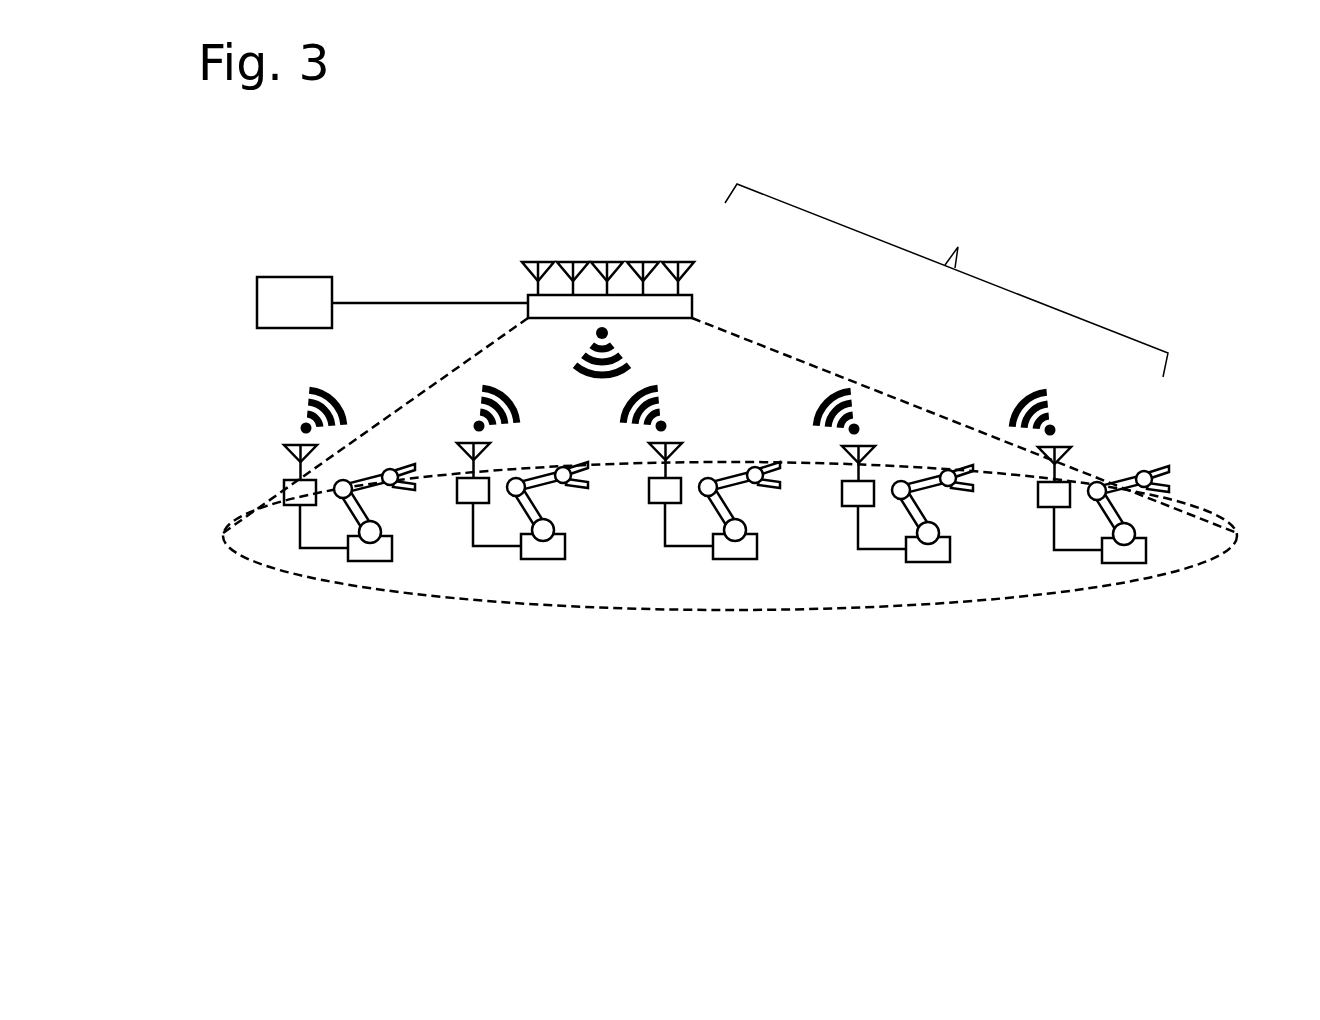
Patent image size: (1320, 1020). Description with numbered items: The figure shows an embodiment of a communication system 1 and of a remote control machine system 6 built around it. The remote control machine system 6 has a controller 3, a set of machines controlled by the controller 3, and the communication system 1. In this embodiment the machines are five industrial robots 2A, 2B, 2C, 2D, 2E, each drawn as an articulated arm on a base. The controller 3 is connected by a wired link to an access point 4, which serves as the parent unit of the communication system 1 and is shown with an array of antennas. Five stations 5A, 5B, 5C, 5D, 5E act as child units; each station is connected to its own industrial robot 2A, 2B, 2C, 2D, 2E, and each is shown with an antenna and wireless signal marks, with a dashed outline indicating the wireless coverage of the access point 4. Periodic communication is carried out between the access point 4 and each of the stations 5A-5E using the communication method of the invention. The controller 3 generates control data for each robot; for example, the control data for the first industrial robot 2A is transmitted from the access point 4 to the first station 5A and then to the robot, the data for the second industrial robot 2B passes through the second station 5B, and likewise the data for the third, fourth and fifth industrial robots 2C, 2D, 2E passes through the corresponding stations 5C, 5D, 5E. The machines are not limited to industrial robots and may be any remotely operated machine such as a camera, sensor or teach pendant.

The communication system 1 is at (946, 280).
The first industrial robot 2A is at (370, 555).
The second industrial robot 2B is at (542, 552).
The third industrial robot 2C is at (735, 552).
The fourth industrial robot 2D is at (927, 552).
The fifth industrial robot 2E is at (1125, 553).
The controller 3 is at (277, 288).
The access point 4 is at (680, 307).
The first station 5A is at (288, 488).
The second station 5B is at (477, 488).
The third station 5C is at (660, 490).
The fourth station 5D is at (852, 495).
The fifth station 5E is at (1062, 488).
The remote control machine system 6 is at (432, 209).